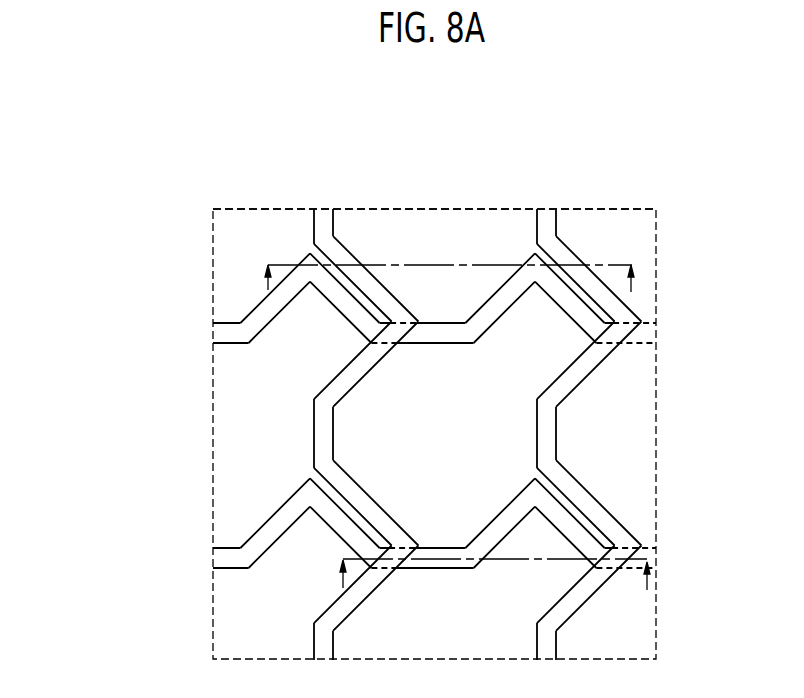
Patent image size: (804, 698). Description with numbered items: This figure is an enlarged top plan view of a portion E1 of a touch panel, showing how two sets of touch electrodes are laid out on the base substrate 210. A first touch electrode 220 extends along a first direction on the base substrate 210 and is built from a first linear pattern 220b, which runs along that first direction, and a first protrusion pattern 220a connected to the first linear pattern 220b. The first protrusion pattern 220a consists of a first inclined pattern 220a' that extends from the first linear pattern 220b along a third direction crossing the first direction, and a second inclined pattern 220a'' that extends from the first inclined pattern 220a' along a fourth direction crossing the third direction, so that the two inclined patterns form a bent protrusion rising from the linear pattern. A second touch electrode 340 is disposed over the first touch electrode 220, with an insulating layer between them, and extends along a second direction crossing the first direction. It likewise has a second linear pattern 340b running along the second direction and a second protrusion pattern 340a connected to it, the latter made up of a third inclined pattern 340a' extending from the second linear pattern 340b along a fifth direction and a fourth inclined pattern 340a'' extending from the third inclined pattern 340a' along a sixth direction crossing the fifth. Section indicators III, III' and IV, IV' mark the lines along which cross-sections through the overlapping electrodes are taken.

The base substrate 210 is at (633, 232).
The portion E1 is at (503, 208).
The second touch electrode 340 is at (477, 364).
The second protrusion pattern 340a is at (477, 365).
The third inclined pattern 340a' is at (477, 341).
The fourth inclined pattern 340a'' is at (477, 383).
The second linear pattern 340b is at (334, 224).
The first touch electrode 220 is at (344, 410).
The first protrusion pattern 220a is at (340, 410).
The first inclined pattern 220a' is at (332, 410).
The second inclined pattern 220a'' is at (367, 410).
The first linear pattern 220b is at (226, 548).
The section line III is at (437, 289).
The section line III' is at (640, 290).
The section line IV is at (484, 581).
The section line IV' is at (642, 591).